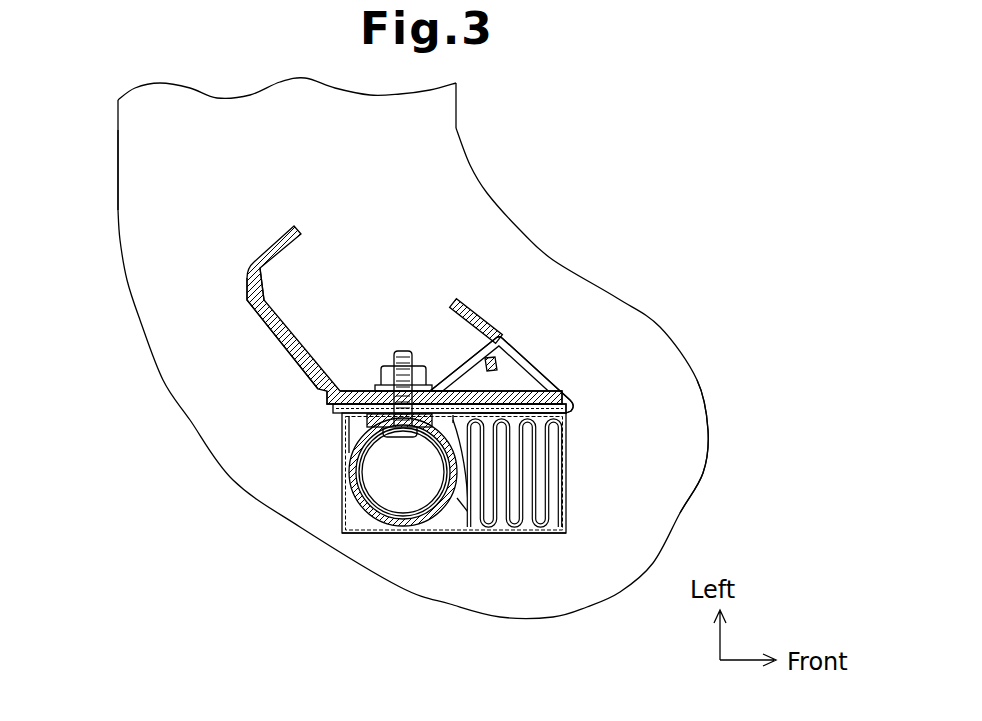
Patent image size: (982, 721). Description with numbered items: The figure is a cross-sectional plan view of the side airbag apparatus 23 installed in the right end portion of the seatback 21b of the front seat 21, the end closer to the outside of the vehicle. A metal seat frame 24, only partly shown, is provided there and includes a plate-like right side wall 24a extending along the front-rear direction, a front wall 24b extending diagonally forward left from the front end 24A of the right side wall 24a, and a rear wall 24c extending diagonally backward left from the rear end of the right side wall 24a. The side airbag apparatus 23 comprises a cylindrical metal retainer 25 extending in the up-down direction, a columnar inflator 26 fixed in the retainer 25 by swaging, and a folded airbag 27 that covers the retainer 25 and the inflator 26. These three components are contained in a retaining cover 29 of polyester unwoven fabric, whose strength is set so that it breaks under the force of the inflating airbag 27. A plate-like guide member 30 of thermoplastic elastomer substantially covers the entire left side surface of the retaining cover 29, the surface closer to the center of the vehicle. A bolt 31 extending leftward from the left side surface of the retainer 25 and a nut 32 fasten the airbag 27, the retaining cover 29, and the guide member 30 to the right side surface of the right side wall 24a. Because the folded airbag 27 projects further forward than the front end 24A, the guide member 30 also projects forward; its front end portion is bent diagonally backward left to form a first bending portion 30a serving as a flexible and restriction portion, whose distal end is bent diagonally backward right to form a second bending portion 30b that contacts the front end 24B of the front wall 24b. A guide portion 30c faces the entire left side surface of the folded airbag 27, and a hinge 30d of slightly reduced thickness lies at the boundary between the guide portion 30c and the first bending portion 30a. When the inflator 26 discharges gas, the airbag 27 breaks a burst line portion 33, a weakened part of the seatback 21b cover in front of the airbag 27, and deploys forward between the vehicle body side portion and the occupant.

The front seat 21 is at (118, 142).
The seatback 21b is at (118, 217).
The side airbag apparatus 23 is at (326, 478).
The seat frame 24 is at (248, 293).
The right side wall 24a is at (350, 388).
The front end 24A is at (441, 388).
The front wall 24b is at (463, 350).
The front end 24B is at (503, 332).
The rear wall 24c is at (270, 318).
The retainer 25 is at (436, 515).
The inflator 26 is at (403, 505).
The airbag 27 is at (542, 523).
The retaining cover 29 is at (567, 519).
The guide member 30 is at (331, 413).
The first bending portion 30a is at (535, 371).
The second bending portion 30b is at (509, 351).
The guide portion 30c is at (481, 402).
The hinge 30d is at (581, 408).
The bolt 31 is at (393, 351).
The nut 32 is at (383, 362).
The burst line portion 33 is at (715, 477).